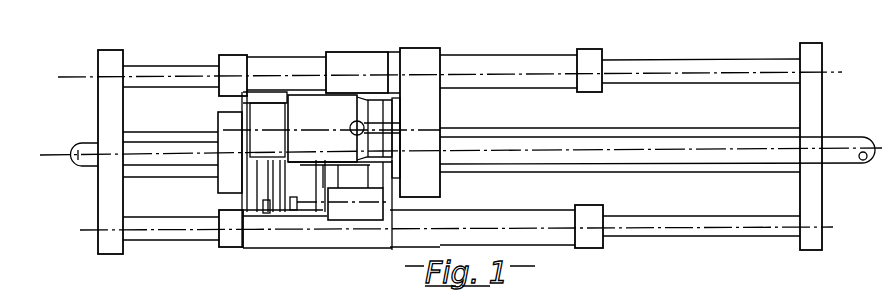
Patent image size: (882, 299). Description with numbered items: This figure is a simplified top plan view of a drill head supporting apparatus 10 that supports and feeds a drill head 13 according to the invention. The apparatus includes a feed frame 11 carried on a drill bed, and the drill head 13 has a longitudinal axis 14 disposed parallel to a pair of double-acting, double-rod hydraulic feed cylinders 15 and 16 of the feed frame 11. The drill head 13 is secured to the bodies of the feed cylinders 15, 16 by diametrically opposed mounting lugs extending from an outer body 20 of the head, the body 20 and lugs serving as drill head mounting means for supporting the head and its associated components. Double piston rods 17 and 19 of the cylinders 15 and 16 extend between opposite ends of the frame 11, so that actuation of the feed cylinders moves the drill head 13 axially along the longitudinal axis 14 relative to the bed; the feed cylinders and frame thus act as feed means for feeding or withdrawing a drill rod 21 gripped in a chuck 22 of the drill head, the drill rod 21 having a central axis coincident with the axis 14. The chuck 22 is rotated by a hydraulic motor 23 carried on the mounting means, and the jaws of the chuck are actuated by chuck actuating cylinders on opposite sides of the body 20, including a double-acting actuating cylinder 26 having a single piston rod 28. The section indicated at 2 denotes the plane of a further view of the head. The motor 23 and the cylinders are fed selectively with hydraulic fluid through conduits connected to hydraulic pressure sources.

The section line 2- 2 is at (192, 43).
The drill head supporting apparatus 10 is at (494, 54).
The feed frame 11 is at (690, 45).
The drill head 13 is at (235, 170).
The longitudinal axis 14 is at (65, 150).
The hydraulic feed cylinder 15 is at (481, 90).
The hydraulic feed cylinder 16 is at (515, 200).
The double piston rod 17 is at (197, 72).
The double piston rod 19 is at (170, 234).
The outer body 20 is at (307, 193).
The drill rod 21 is at (84, 169).
The chuck 22 is at (211, 143).
The hydraulic motor 23 is at (328, 125).
The chuck actuating cylinder 26 is at (345, 213).
The single piston rod 28 is at (282, 214).